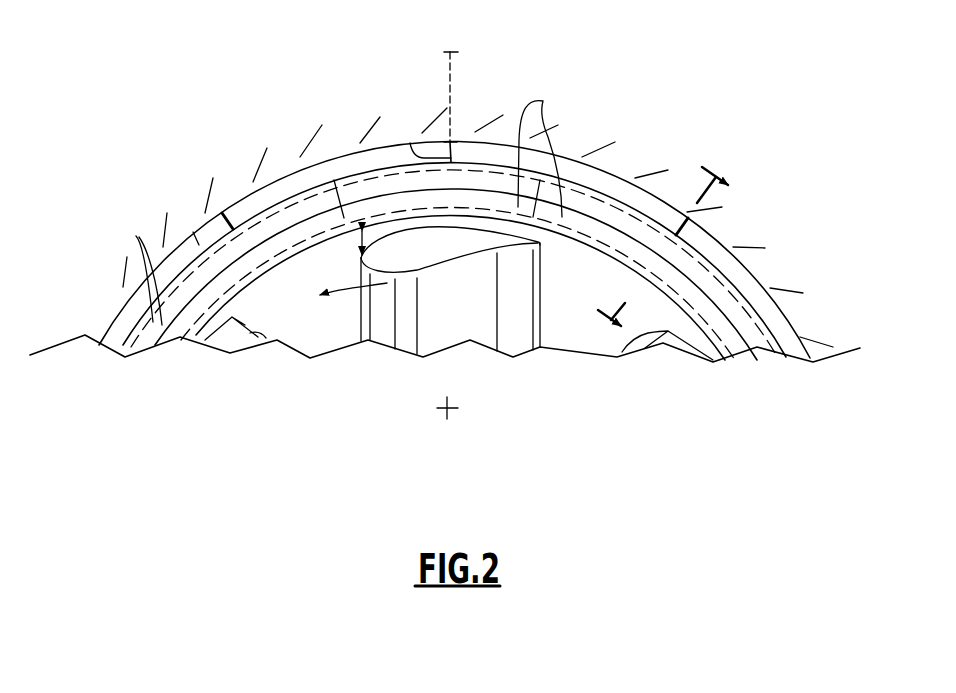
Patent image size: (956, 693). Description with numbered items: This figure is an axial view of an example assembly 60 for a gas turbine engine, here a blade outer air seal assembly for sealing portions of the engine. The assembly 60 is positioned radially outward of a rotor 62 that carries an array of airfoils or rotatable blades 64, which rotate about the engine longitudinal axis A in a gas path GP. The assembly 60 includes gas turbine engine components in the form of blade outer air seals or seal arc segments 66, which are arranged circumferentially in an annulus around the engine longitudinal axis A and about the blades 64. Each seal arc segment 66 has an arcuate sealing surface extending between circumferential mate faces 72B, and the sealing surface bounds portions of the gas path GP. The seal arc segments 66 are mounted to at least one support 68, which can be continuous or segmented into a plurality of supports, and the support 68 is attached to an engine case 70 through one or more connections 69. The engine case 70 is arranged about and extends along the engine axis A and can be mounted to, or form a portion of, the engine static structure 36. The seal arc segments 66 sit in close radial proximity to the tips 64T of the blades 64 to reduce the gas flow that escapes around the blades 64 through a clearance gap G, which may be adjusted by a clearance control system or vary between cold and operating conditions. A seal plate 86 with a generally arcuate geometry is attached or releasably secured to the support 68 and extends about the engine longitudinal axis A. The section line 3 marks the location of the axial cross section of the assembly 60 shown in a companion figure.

The assembly 60 is at (334, 79).
The engine static structure 36 is at (450, 50).
The rotor 62 is at (478, 264).
The blades 64 is at (361, 338).
The tips 64T is at (402, 238).
The seal arc segments 66 is at (136, 236).
The support 68 is at (481, 163).
The connections 69 is at (412, 143).
The engine case 70 is at (718, 242).
The circumferential mate faces 72B is at (303, 236).
The seal plate 86 is at (193, 232).
The section line for FIG. 3 is at (654, 242).
The clearance gap G is at (356, 249).
The gas path GP is at (335, 337).
The engine longitudinal axis A is at (439, 408).